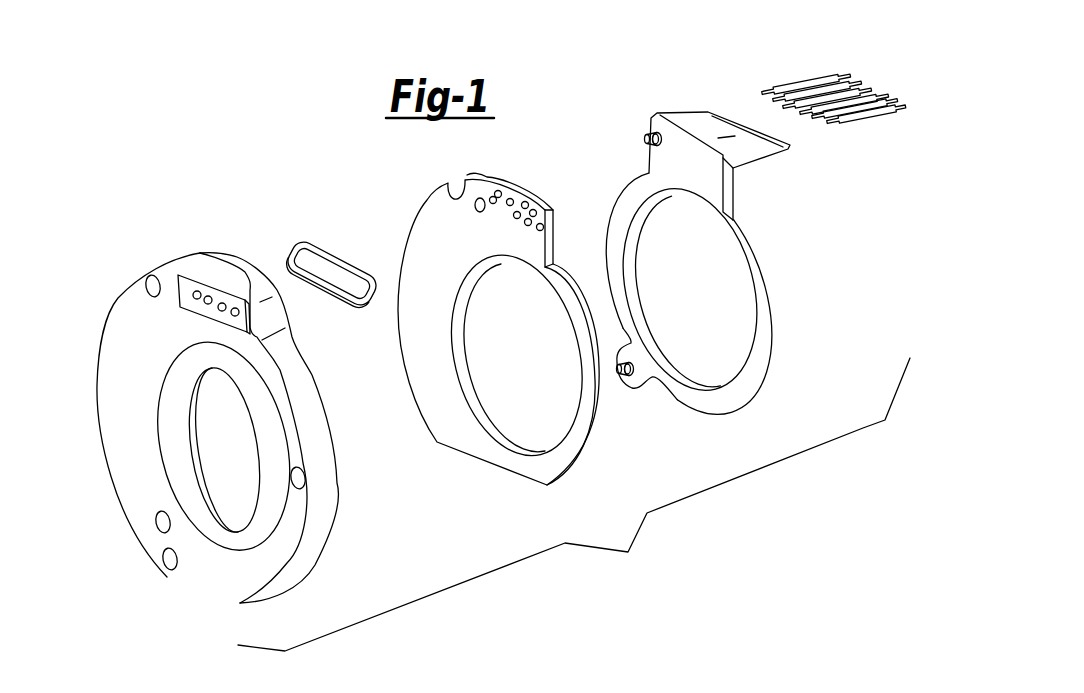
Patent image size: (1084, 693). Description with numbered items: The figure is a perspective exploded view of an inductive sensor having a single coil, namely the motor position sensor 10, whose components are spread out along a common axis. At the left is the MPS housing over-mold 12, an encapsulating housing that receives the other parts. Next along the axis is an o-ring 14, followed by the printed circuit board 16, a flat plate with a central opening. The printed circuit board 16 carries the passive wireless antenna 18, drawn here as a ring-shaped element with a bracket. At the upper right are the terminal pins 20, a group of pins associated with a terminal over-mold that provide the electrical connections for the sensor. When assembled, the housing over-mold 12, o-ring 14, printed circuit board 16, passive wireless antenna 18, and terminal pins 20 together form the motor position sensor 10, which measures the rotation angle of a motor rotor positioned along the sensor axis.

The motor position sensor 10 is at (204, 220).
The MPS housing over-mold 12 is at (333, 497).
The o-ring 14 is at (342, 258).
The printed circuit board 16 is at (587, 423).
The passive wireless antenna 18 is at (757, 377).
The terminal pins 20 is at (837, 87).